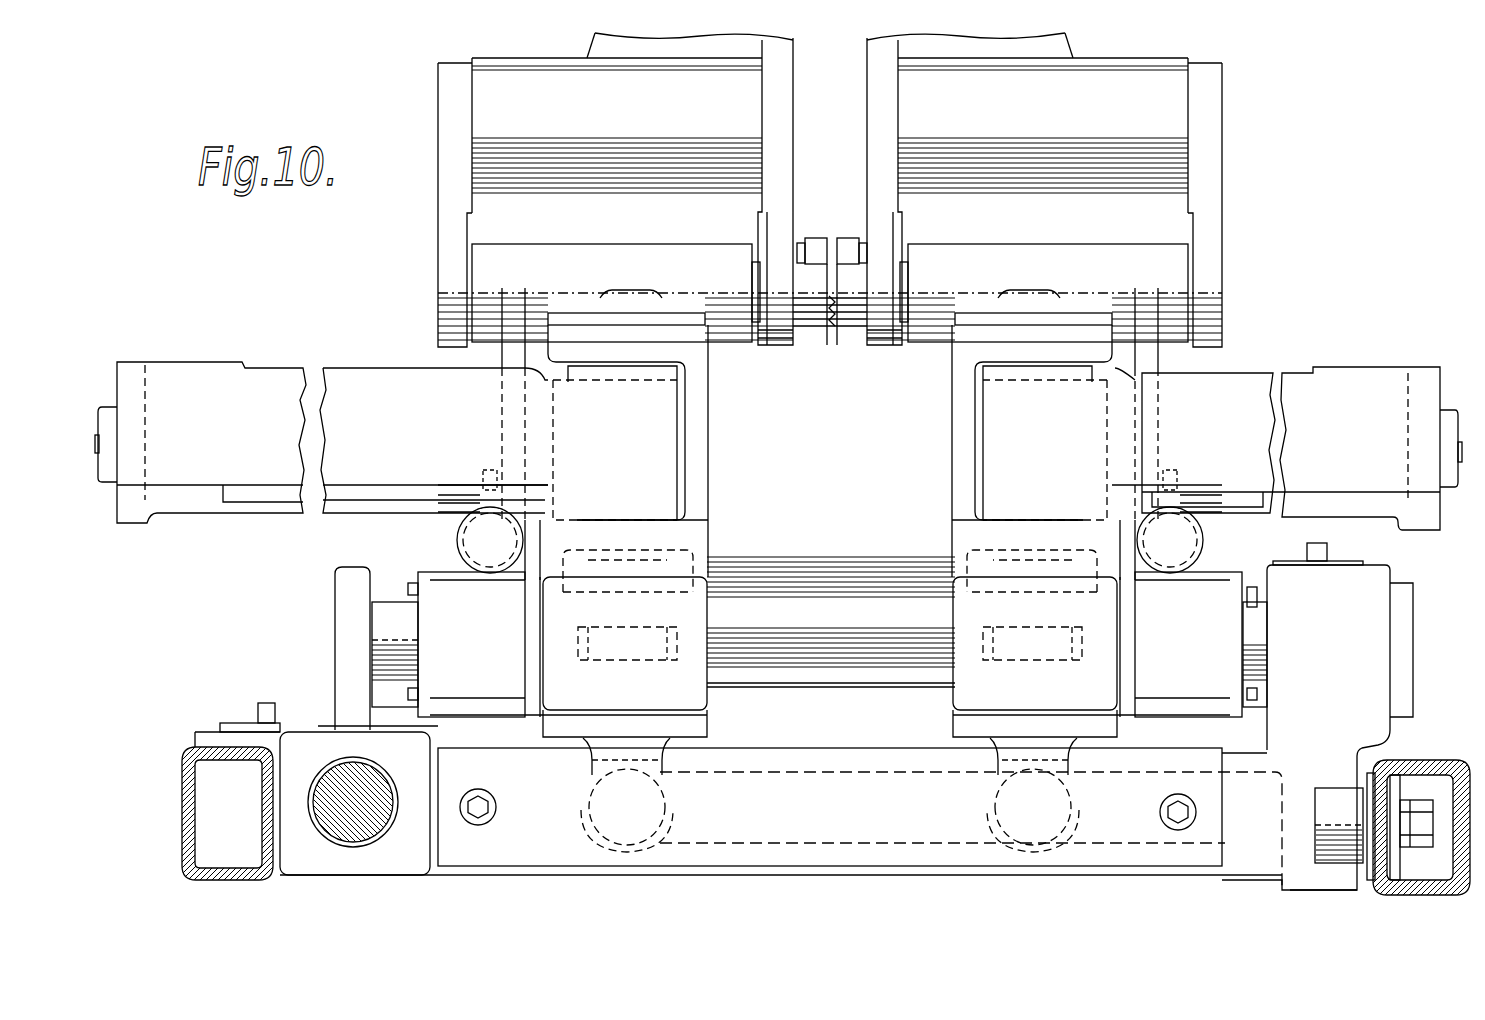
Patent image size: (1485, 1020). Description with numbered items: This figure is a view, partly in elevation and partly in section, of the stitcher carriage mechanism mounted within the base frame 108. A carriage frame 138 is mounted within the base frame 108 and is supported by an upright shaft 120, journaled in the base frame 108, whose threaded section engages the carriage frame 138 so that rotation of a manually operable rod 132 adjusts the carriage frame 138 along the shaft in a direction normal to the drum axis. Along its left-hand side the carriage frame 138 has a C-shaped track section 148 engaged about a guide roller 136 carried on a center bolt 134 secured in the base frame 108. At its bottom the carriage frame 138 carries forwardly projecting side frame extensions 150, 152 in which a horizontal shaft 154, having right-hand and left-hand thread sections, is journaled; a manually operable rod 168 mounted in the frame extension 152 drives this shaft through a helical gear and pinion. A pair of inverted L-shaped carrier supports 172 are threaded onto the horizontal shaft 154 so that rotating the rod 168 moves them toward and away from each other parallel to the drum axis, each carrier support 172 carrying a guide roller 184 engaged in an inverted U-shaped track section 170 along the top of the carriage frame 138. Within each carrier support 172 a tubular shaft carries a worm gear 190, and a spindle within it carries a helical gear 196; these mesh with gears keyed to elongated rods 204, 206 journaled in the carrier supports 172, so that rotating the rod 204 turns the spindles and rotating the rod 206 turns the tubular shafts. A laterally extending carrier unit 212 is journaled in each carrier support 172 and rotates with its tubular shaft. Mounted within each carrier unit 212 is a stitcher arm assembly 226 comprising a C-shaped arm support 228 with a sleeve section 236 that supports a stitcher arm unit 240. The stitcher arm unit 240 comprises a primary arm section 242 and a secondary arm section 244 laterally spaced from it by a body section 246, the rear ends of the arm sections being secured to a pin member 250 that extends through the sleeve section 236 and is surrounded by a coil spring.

The base frame 108 is at (178, 751).
The upright shaft 120 is at (357, 830).
The manually operable rod 132 is at (265, 703).
The center bolt 134 is at (1435, 830).
The guide roller 136 is at (1338, 842).
The carriage frame 138 is at (334, 669).
The C-shaped track section 148 is at (1343, 880).
The side frame extension 150 is at (336, 568).
The side frame extension 152 is at (1385, 572).
The horizontal shaft 154 is at (386, 602).
The manually operable rod 168 is at (1298, 554).
The inverted U-shaped track section 170 is at (804, 751).
The carrier support 172 is at (713, 477).
The guide roller 184 is at (600, 798).
The worm gear 190 is at (700, 540).
The helical gear 196 is at (640, 656).
The elongated rod 204 is at (905, 650).
The elongated rod 206 is at (866, 560).
The carrier unit 212 is at (281, 350).
The stitcher arm assembly 226 is at (421, 266).
The arm support 228 is at (500, 348).
The sleeve section 236 is at (580, 255).
The stitcher arm unit 240 is at (428, 112).
The primary arm section 242 is at (783, 347).
The secondary arm section 244 is at (449, 198).
The body section 246 is at (656, 186).
The pin member 250 is at (836, 262).